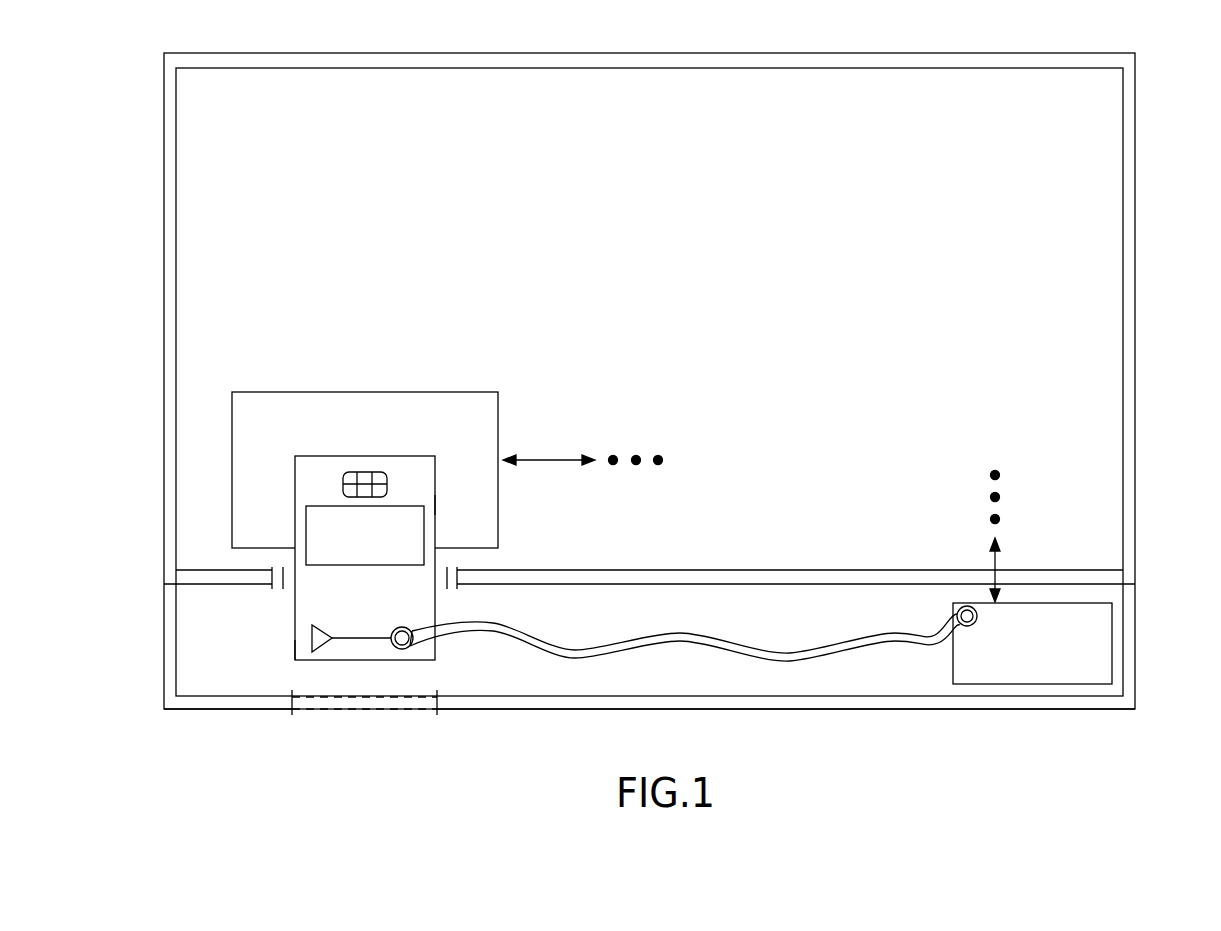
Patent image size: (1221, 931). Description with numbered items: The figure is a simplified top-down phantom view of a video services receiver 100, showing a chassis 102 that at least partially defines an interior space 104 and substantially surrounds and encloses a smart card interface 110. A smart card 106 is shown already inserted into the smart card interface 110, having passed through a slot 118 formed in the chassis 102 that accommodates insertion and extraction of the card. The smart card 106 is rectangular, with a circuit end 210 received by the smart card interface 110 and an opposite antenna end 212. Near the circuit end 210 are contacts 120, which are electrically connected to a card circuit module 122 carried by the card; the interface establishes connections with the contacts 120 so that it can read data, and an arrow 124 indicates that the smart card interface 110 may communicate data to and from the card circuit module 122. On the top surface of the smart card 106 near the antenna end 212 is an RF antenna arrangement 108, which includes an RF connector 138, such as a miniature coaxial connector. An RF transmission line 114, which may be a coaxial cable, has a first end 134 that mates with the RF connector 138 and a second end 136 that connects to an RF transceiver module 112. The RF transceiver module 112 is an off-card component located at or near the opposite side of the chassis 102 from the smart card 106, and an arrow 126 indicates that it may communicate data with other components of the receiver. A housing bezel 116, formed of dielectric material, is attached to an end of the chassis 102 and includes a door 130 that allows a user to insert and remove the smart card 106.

The video services receiver 100 is at (392, 40).
The chassis 102 is at (524, 53).
The interior space 104 is at (1025, 196).
The smart card 106 is at (435, 500).
The RF antenna arrangement 108 is at (340, 613).
The smart card interface 110 is at (480, 392).
The RF transceiver module 112 is at (1112, 630).
The RF transmission line 114 is at (690, 633).
The housing bezel 116 is at (190, 709).
The slot 118 is at (282, 596).
The contacts 120 is at (343, 485).
The card circuit module 122 is at (306, 527).
The arrow 124 is at (566, 458).
The arrow 126 is at (992, 562).
The door 130 is at (388, 703).
The first end 134 is at (432, 660).
The second end 136 is at (930, 606).
The RF connector 138 is at (402, 627).
The circuit end 210 is at (450, 460).
The antenna end 212 is at (270, 660).